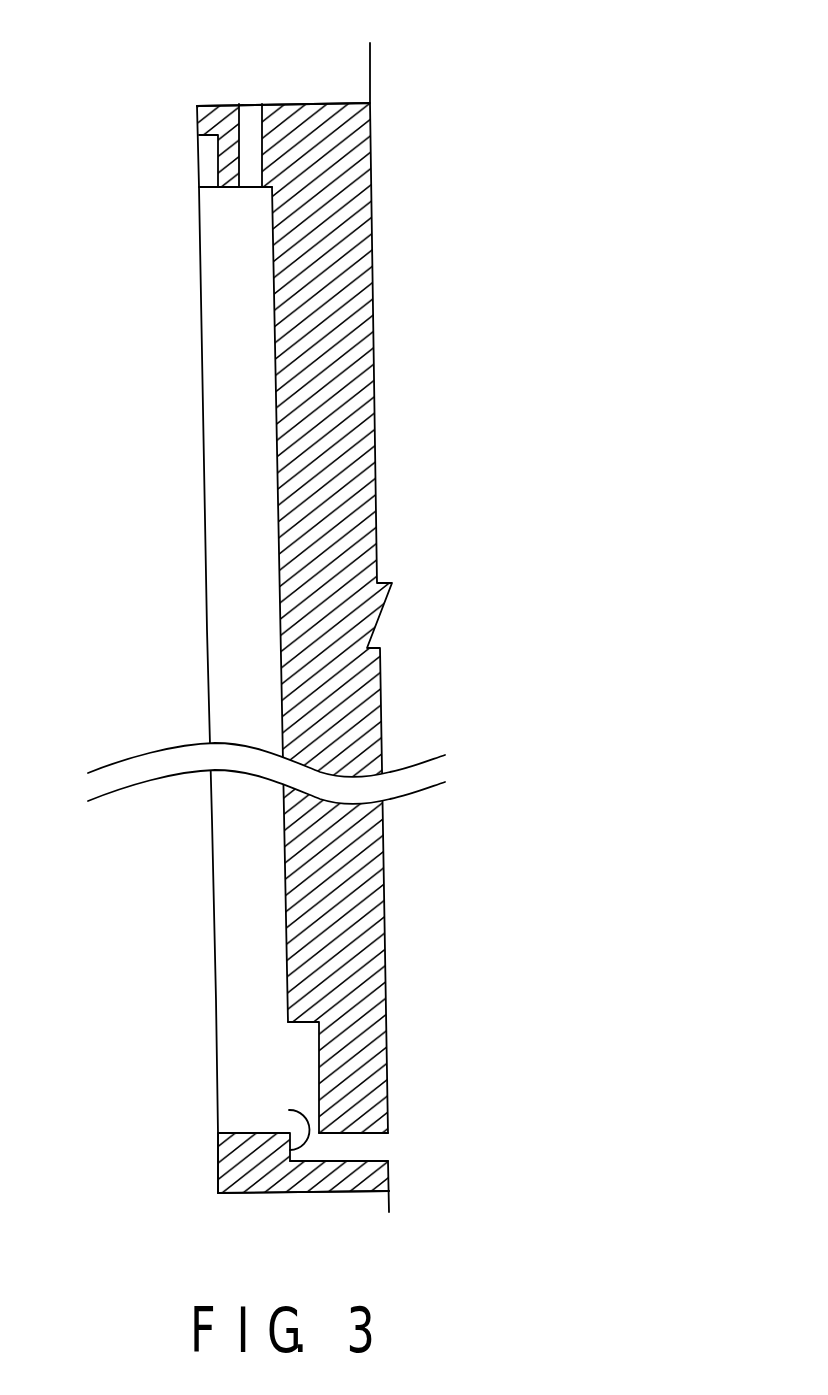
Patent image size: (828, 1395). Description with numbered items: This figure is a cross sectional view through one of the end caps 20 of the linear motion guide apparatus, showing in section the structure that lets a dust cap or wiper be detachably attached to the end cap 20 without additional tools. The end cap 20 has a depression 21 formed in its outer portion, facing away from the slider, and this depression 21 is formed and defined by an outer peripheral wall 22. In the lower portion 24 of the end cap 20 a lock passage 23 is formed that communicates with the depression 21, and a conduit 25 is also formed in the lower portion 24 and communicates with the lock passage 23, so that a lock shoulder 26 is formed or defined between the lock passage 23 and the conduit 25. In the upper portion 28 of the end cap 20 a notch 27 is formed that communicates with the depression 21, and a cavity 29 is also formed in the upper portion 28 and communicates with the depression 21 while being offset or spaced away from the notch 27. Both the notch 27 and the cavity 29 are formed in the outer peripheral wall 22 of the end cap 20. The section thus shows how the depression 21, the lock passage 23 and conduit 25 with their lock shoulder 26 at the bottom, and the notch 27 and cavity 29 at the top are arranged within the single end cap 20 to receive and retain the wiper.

The end cap 20 is at (357, 350).
The depression 21 is at (238, 640).
The outer peripheral wall 22 is at (237, 1157).
The lock passage 23 is at (302, 1079).
The lower portion 24 is at (344, 1210).
The conduit 25 is at (347, 1149).
The lock shoulder 26 is at (288, 1108).
The notch 27 is at (205, 168).
The upper portion 28 is at (347, 85).
The cavity 29 is at (252, 127).